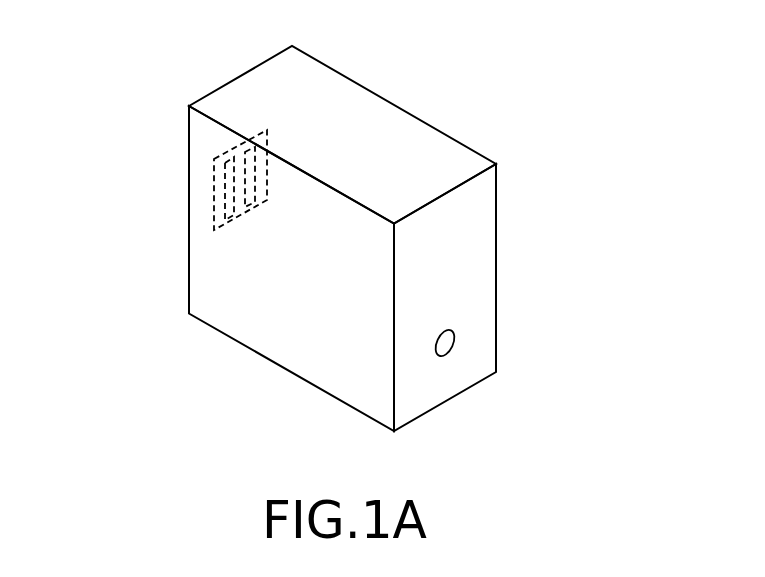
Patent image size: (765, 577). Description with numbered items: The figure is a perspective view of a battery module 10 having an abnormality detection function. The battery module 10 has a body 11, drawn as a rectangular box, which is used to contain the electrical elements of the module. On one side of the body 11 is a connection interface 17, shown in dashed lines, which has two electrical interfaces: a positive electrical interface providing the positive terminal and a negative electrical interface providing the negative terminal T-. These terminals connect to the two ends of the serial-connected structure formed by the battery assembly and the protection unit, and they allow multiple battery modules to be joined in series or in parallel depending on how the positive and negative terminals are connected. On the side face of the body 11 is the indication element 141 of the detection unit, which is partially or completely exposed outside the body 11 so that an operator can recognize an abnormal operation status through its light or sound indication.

The battery module 10 is at (375, 233).
The body 11 is at (438, 140).
The connection interface 17 is at (214, 192).
The indication element 141 is at (450, 343).
The negative terminal T- is at (229, 160).